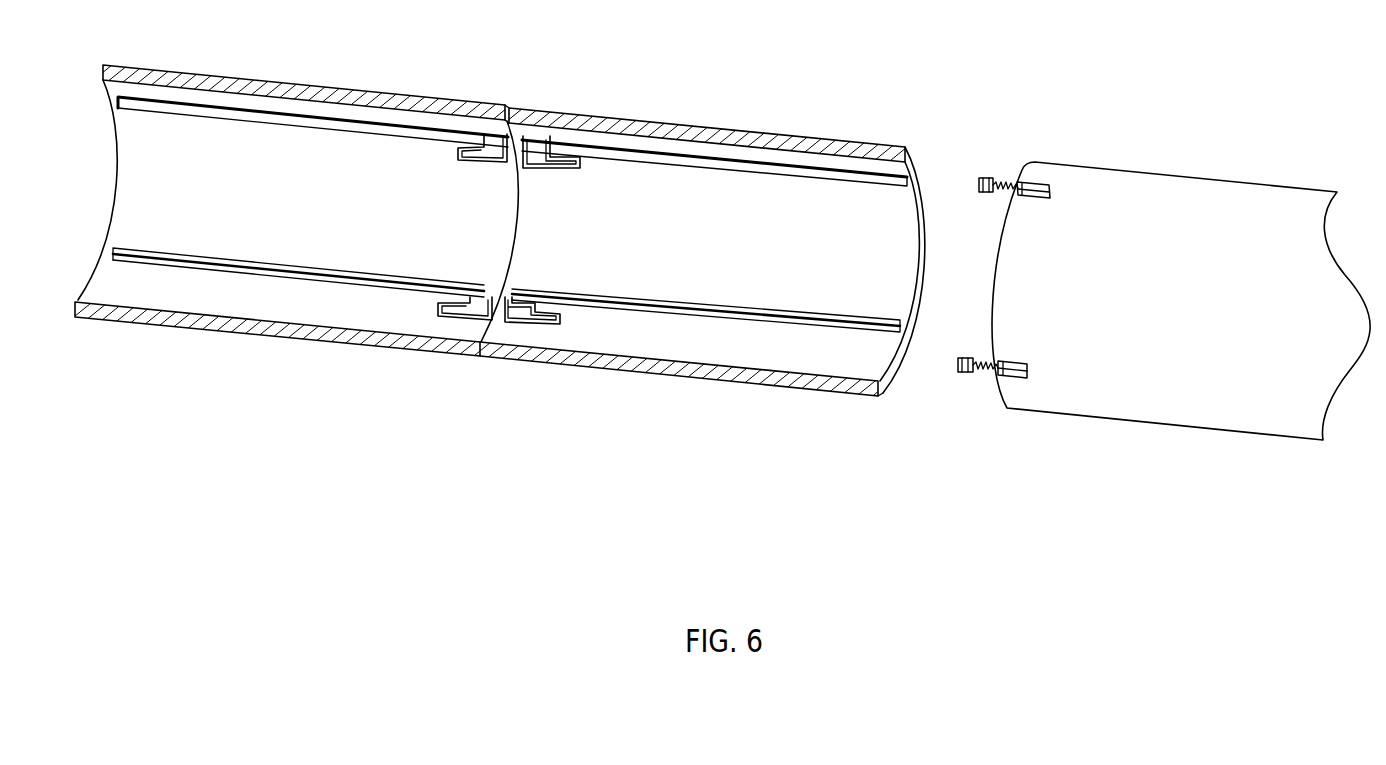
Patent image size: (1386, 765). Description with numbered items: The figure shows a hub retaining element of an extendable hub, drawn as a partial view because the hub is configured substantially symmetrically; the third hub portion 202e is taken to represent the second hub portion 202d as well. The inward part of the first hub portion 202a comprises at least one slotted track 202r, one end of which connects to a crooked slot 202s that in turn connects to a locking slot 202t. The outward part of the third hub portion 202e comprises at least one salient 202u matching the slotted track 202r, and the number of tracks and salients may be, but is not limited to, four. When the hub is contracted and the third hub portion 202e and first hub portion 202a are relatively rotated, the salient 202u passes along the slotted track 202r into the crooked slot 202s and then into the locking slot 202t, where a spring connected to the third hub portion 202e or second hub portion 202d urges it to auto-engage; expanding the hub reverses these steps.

The first hub portion 202a is at (848, 111).
The slotted track 202r is at (510, 191).
The crooked slot 202s is at (502, 185).
The locking slot 202t is at (522, 229).
The salient 202u is at (1014, 172).
The third hub portion 202e is at (1181, 251).
The second hub portion 202d is at (1181, 268).